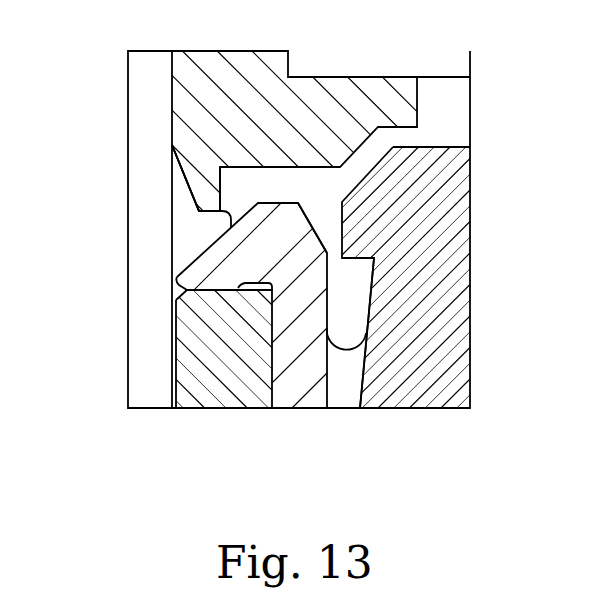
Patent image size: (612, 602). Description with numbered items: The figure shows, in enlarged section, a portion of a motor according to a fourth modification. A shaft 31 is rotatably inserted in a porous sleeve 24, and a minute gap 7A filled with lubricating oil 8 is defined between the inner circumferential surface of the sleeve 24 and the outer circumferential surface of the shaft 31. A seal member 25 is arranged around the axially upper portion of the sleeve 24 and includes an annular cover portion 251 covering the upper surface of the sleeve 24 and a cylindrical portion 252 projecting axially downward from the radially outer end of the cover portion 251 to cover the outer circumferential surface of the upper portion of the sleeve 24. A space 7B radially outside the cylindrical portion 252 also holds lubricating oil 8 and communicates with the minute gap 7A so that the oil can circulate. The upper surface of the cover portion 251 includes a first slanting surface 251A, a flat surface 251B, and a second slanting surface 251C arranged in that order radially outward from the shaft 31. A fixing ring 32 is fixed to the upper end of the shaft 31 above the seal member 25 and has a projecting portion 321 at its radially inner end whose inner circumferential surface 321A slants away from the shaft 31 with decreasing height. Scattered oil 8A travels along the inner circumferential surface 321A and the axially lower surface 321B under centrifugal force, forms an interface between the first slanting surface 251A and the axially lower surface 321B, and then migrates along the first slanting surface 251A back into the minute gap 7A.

The shaft 31 is at (142, 58).
The fixing ring 32 is at (190, 55).
The projecting portion 321 is at (175, 160).
The inner circumferential surface 321A is at (183, 175).
The axially lower surface 321B is at (192, 195).
The scattered oil 8A is at (222, 211).
The first slanting surface 251A is at (218, 229).
The flat surface 251B is at (277, 203).
The second slanting surface 251C is at (341, 203).
The lubricating oil 8 is at (185, 264).
The minute gap 7A is at (170, 367).
The space 7B is at (359, 323).
The sleeve 24 is at (200, 408).
The seal member 25 is at (333, 462).
The cover portion 251 is at (243, 284).
The cylindrical portion 252 is at (296, 400).